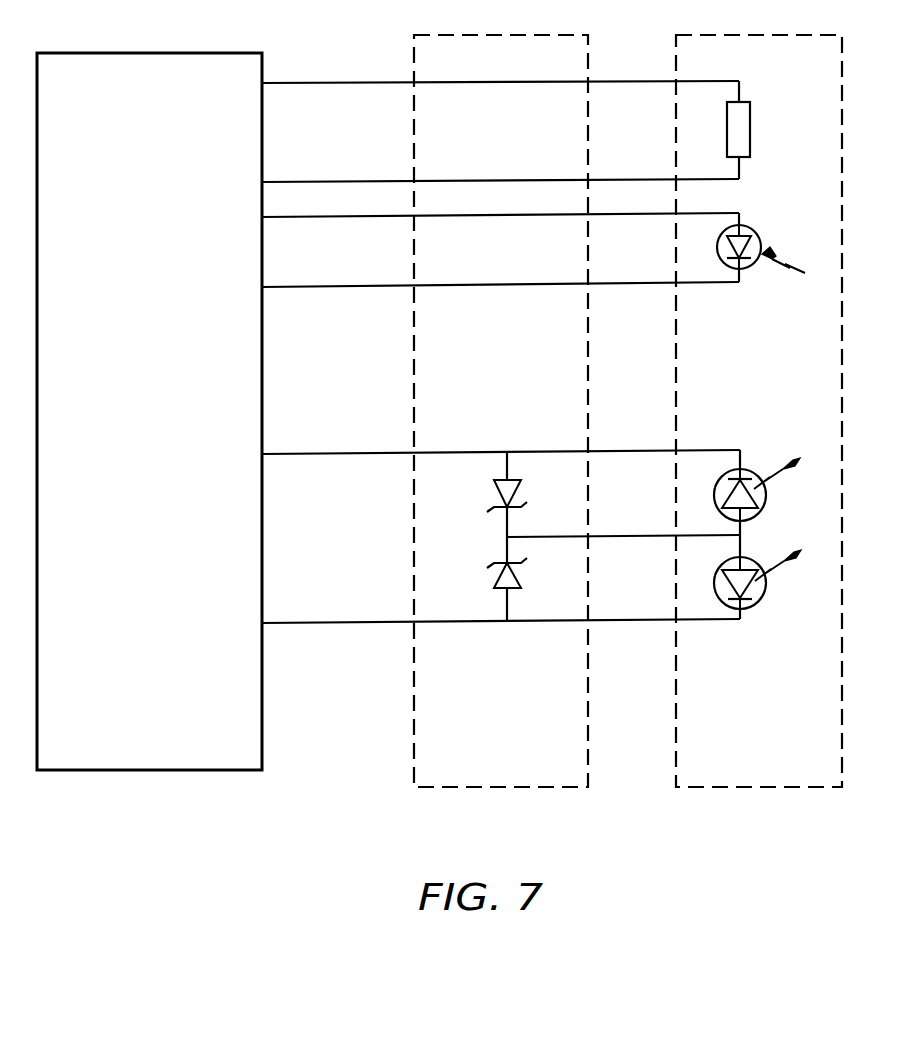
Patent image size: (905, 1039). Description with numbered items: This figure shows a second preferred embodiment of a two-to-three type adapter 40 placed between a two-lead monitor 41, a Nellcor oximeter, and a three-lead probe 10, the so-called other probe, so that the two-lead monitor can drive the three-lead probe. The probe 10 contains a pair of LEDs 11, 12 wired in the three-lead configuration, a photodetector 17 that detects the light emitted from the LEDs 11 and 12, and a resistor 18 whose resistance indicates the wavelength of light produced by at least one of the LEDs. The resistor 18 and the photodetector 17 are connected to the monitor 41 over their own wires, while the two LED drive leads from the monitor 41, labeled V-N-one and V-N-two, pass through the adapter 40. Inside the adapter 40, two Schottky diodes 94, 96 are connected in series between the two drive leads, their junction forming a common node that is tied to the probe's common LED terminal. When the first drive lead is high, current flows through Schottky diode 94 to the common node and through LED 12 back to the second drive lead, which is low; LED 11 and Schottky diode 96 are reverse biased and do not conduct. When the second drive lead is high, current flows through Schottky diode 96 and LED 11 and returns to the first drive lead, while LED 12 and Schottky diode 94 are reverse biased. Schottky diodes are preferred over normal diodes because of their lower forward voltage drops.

The 2-lead monitor 41 is at (149, 440).
The 2-to-3 Type Adapter 40 is at (501, 435).
The 3-lead probe 10 is at (763, 434).
The resistor 18 is at (751, 128).
The photodetector 17 is at (762, 244).
The LED 11 is at (750, 468).
The LED 12 is at (753, 560).
The Schottky diode 94 is at (494, 490).
The Schottky diode 96 is at (494, 578).